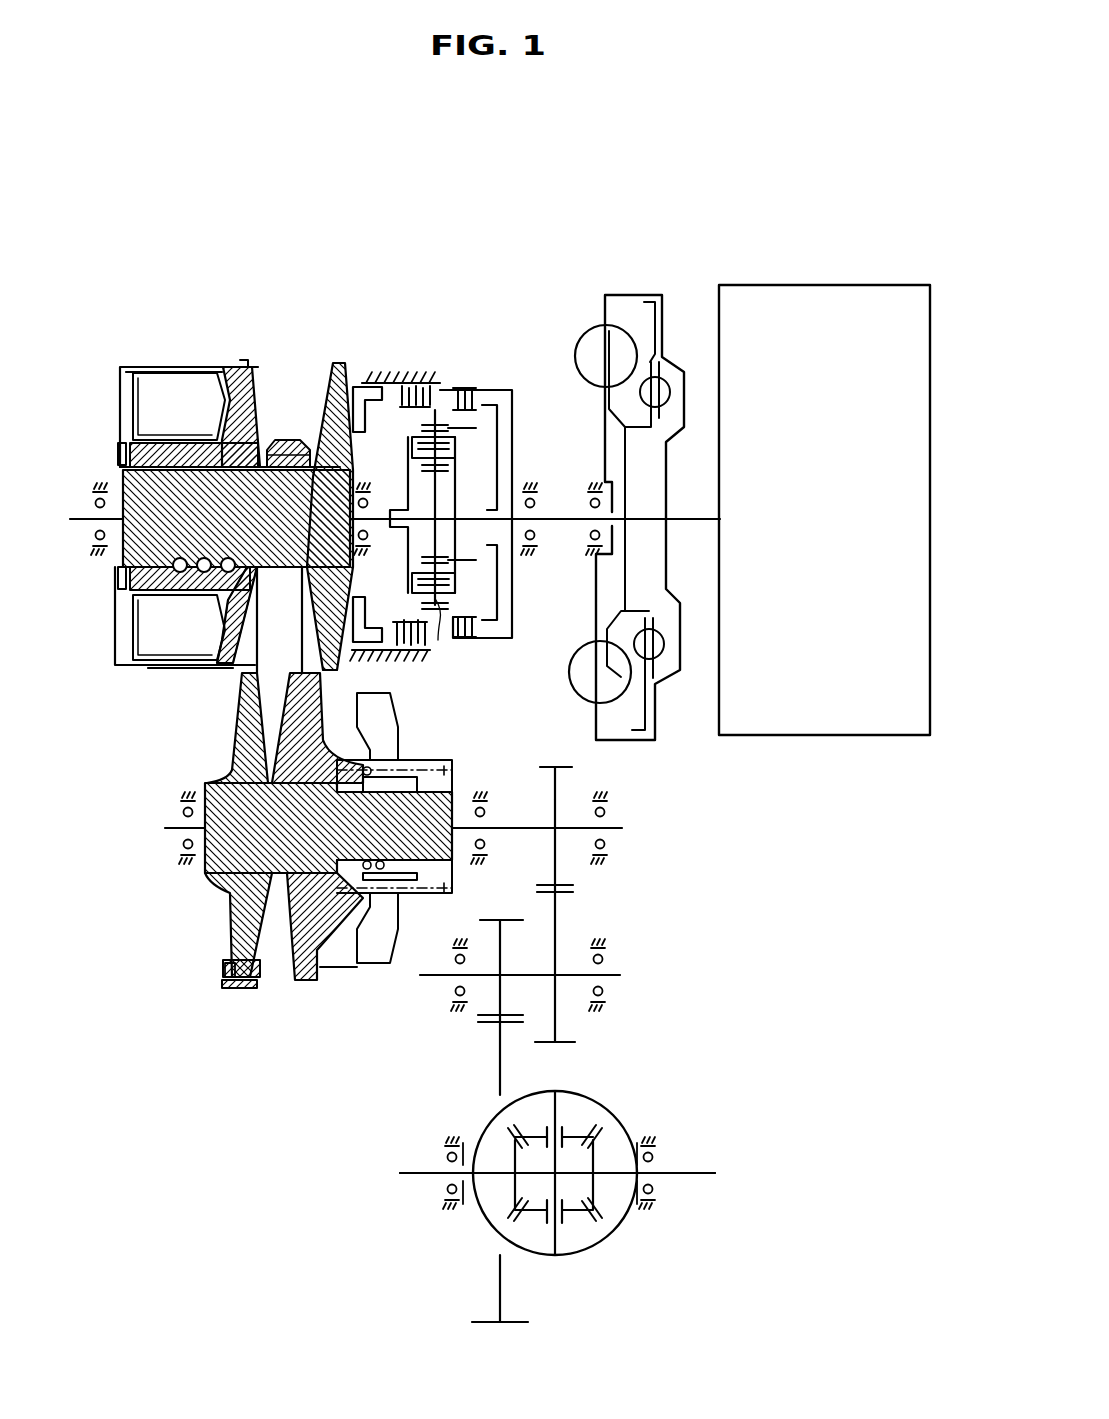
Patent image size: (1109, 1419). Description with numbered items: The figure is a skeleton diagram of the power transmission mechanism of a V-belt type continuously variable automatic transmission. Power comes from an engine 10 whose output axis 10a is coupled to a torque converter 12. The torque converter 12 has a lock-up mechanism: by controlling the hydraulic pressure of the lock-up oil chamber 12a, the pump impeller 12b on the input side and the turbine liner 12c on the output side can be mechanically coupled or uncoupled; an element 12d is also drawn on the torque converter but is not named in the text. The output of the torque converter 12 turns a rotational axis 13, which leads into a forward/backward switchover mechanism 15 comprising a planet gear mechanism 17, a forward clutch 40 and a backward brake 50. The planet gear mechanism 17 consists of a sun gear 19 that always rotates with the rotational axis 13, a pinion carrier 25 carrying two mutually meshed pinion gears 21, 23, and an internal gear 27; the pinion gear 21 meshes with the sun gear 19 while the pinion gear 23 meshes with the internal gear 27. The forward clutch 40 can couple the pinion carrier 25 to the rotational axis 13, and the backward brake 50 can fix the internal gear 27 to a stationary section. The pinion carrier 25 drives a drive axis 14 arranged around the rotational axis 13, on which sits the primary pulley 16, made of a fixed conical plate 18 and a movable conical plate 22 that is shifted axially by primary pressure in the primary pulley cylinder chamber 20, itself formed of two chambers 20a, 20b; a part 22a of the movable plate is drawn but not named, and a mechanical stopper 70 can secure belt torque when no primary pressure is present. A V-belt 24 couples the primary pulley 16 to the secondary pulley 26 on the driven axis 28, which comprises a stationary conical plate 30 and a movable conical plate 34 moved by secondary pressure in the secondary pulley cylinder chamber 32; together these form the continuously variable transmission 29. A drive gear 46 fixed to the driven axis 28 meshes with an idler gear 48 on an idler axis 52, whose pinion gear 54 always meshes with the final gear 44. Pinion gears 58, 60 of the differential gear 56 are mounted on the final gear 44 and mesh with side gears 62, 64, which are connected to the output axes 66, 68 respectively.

The engine 10 is at (761, 285).
The output axis 10a is at (694, 519).
The torque converter 12 is at (626, 284).
The lock-up oil chamber 12a is at (652, 598).
The pump impeller 12b is at (588, 692).
The turbine liner 12c is at (600, 662).
The drive sprocket 12d is at (656, 327).
The rotational axis 13 is at (544, 514).
The drive axis 14 is at (381, 512).
The forward/backward switchover mechanism 15 is at (412, 357).
The primary pulley 16 is at (318, 352).
The planet gear mechanism 17 is at (472, 447).
The fixed conical plate 18 is at (342, 366).
The sun gear 19 is at (436, 533).
The primary pulley cylinder chamber 20 is at (162, 383).
The chamber 20a is at (120, 658).
The chamber 20b is at (190, 367).
The pinion gear 21 is at (450, 570).
The movable conical plate 22 is at (244, 360).
The rotor flange 22a is at (244, 378).
The pinion gear 23 is at (440, 602).
The V-belt 24 is at (244, 678).
The pinion carrier 25 is at (408, 547).
The secondary pulley 26 is at (268, 1000).
The internal gear 27 is at (434, 601).
The driven axis 28 is at (530, 836).
The V-belt type continuously variable automatic transmission 29 is at (228, 755).
The stationary conical plate 30 is at (241, 910).
The secondary pulley cylinder chamber 32 is at (346, 966).
The movable conical plate 34 is at (291, 986).
The forward clutch 40 is at (496, 380).
The final gear 44 is at (504, 1324).
The drive gear 46 is at (549, 769).
The idler gear 48 is at (568, 1046).
The backward brake 50 is at (446, 390).
The idler axis 52 is at (562, 962).
The pinion gear 54 is at (494, 1000).
The differential gear 56 is at (618, 1098).
The pinion gear 58 is at (571, 1214).
The pinion gear 60 is at (536, 1118).
The side gear 62 is at (512, 1198).
The side gear 64 is at (606, 1150).
The output axis 66 is at (409, 1176).
The output axis 68 is at (688, 1176).
The mechanical stopper 70 is at (118, 449).